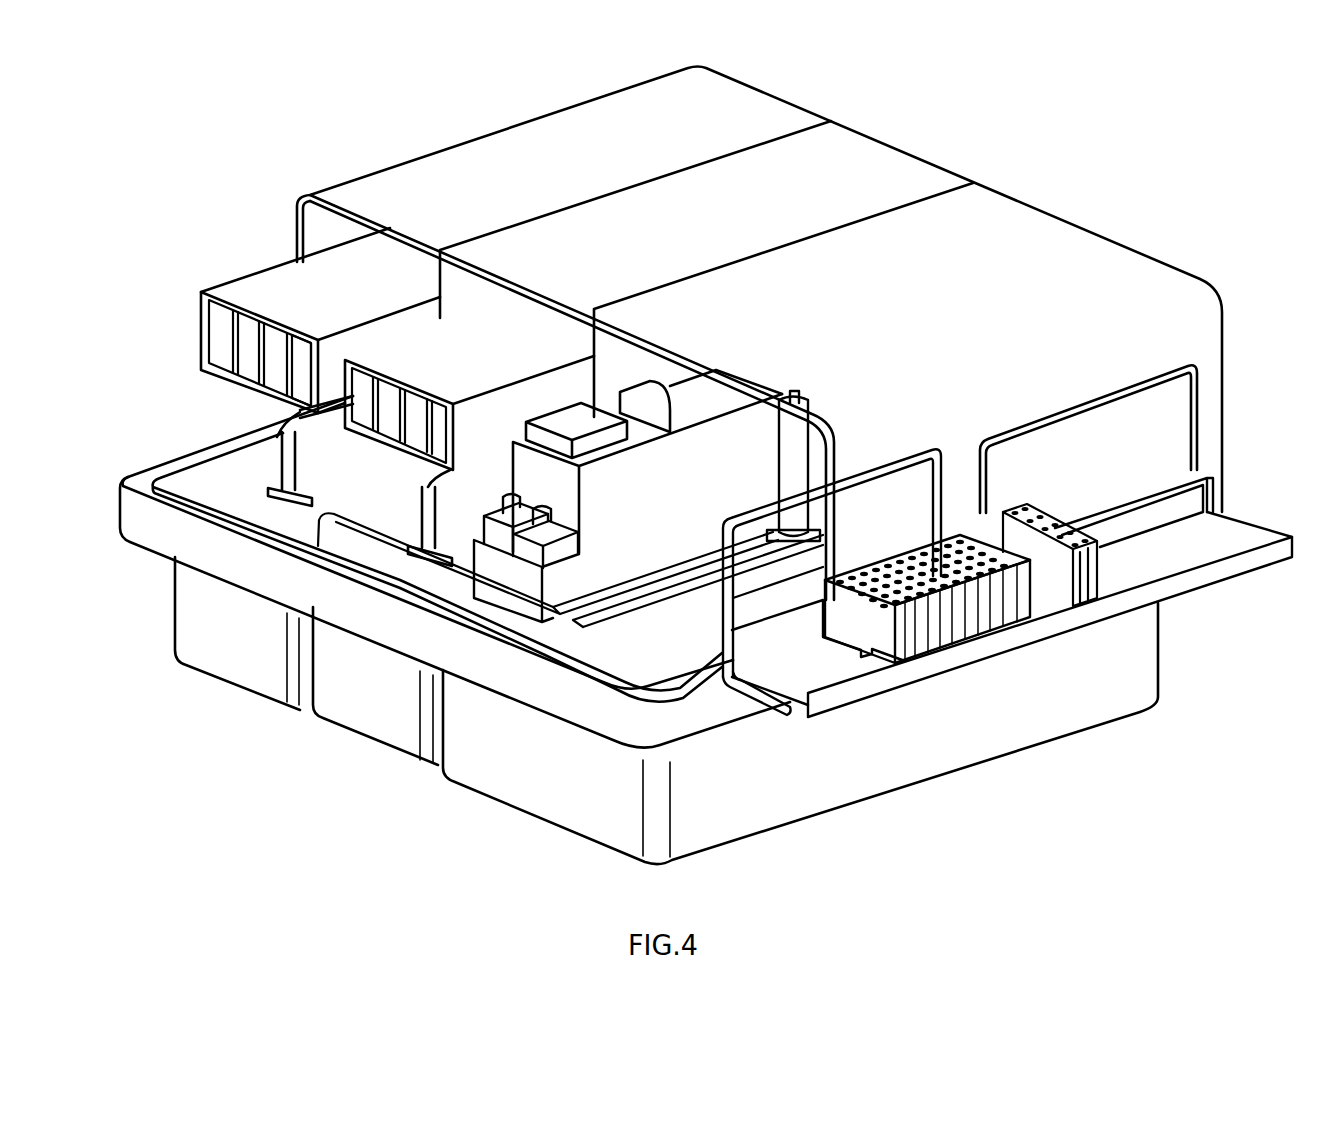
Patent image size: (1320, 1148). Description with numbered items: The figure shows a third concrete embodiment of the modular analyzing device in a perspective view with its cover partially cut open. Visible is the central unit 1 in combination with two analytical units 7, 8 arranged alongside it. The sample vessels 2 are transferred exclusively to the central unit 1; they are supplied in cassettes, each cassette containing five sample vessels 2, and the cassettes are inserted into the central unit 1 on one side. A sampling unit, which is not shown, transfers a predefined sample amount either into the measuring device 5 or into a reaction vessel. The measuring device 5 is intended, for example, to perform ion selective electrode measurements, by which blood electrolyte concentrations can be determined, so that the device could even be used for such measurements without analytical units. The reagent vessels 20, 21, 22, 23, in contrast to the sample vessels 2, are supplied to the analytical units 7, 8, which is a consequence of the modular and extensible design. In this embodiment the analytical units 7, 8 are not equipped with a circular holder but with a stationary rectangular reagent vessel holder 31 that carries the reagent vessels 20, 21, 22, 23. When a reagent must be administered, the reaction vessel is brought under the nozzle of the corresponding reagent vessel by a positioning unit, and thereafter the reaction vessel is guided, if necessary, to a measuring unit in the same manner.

The central unit 1 is at (540, 793).
The sample vessels 2 is at (935, 598).
The measuring device 5 is at (647, 510).
The analytical unit 7 is at (377, 720).
The analytical unit 8 is at (240, 661).
The reagent vessel 20 is at (222, 336).
The reagent vessel 21 is at (247, 356).
The reagent vessel 22 is at (275, 370).
The reagent vessel 23 is at (298, 375).
The reagent vessel holder 31 is at (382, 277).